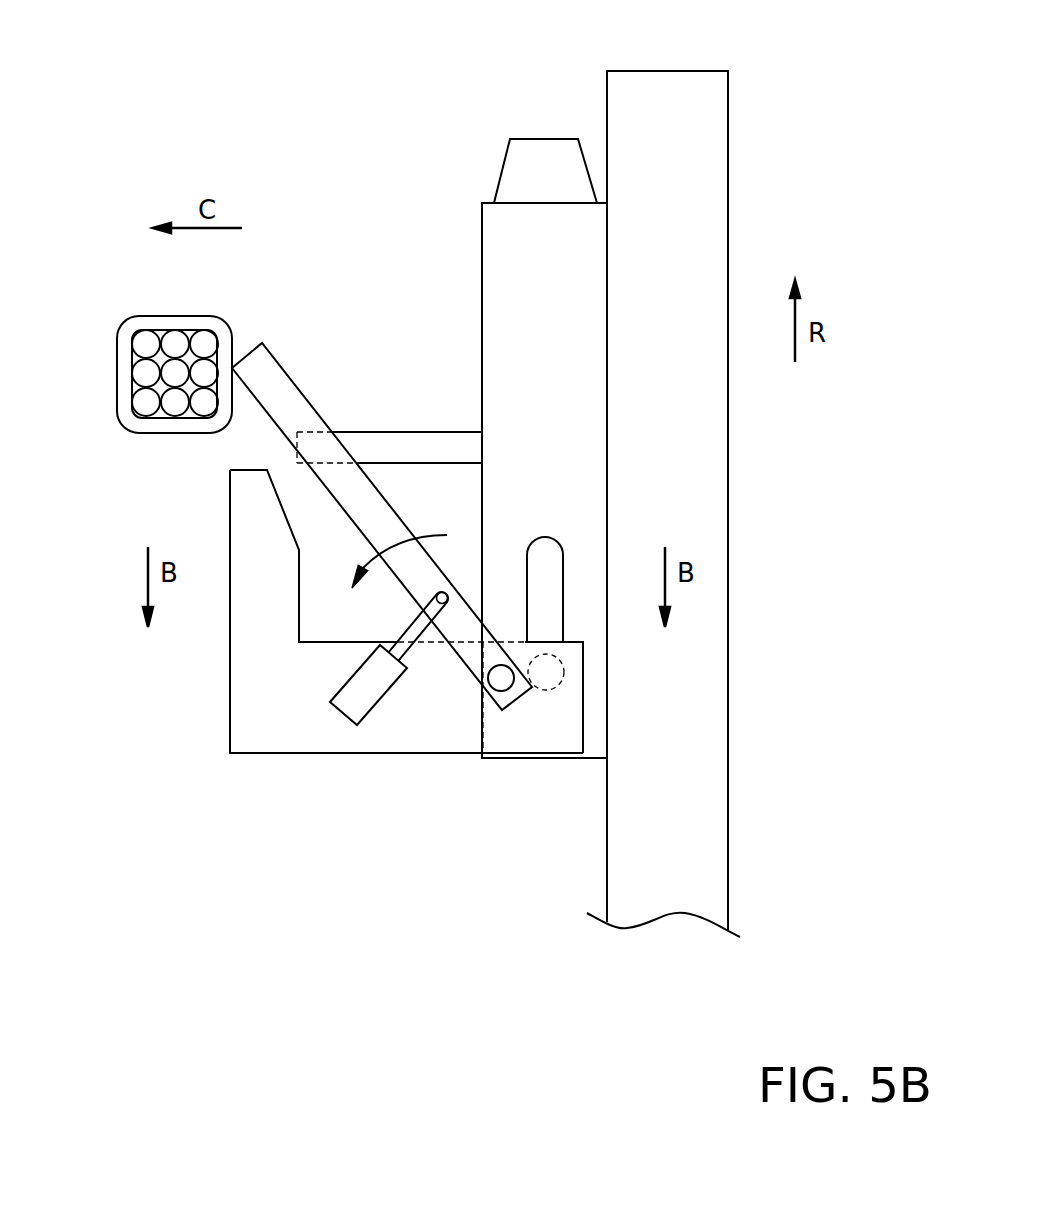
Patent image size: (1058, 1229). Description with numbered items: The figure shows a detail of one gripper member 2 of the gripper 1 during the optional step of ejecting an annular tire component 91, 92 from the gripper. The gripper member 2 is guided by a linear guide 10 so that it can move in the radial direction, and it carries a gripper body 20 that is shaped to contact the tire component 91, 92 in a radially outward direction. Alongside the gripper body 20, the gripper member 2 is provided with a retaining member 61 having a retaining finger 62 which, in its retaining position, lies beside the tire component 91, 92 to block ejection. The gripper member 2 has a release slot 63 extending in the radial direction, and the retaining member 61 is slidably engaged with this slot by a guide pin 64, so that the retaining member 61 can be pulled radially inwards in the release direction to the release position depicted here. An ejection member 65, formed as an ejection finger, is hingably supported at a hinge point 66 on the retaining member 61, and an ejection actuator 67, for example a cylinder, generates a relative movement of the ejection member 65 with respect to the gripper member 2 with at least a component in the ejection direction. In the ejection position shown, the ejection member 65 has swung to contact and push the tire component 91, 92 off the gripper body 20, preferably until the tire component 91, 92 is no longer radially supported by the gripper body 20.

The gripper 1 is at (166, 103).
The gripper member 2 is at (592, 400).
The linear guide 10 is at (712, 538).
The gripper body 20 is at (432, 447).
The retaining member 61 is at (243, 722).
The retaining finger 62 is at (242, 505).
The release slot 63 is at (541, 551).
The guide pin 64 is at (548, 672).
The ejection member 65 is at (285, 393).
The hinge point 66 is at (491, 686).
The ejection actuator 67 is at (355, 710).
The tire component 91 is at (171, 327).
The tire component 92 is at (175, 373).